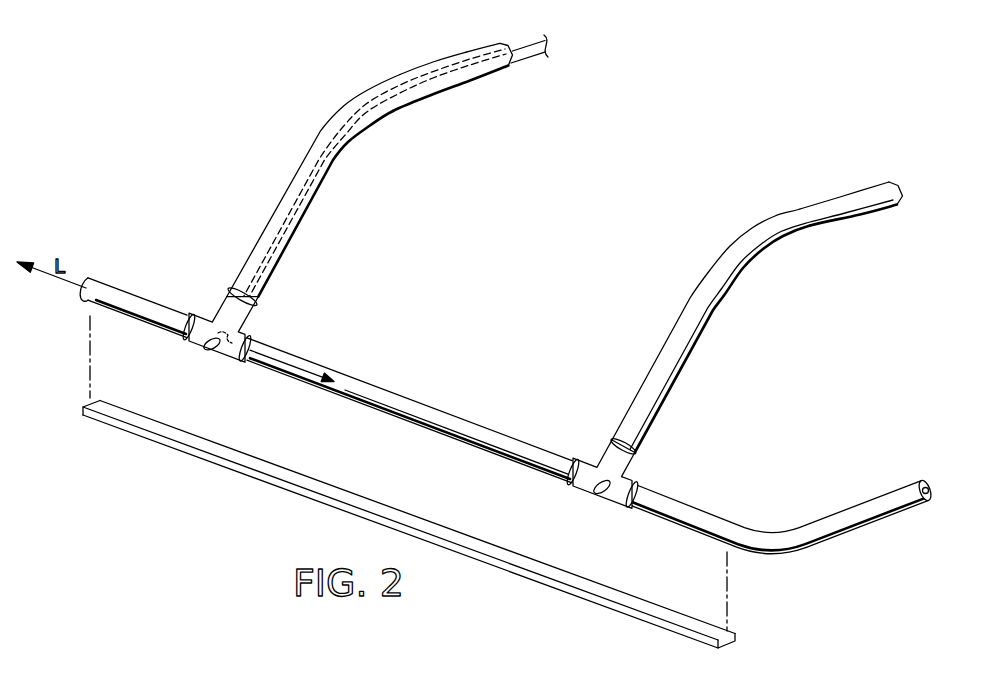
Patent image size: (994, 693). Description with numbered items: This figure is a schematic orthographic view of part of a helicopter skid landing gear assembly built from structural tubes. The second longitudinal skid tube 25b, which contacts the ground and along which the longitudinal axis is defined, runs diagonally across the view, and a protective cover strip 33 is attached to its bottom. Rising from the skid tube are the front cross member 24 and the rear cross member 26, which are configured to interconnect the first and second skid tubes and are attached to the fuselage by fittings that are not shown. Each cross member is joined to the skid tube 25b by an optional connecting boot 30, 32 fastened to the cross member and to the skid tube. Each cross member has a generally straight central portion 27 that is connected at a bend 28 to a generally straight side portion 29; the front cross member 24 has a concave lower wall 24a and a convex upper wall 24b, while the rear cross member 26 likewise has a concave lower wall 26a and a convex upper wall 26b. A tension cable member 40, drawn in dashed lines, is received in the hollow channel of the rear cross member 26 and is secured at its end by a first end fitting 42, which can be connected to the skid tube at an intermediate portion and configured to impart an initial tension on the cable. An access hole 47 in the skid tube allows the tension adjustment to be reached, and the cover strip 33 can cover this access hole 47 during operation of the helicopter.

The front cross member 24 is at (763, 299).
The concave lower wall 24a is at (833, 230).
The convex upper wall 24b is at (827, 202).
The second longitudinal skid tube 25b is at (413, 399).
The rear cross member 26 is at (364, 174).
The concave lower wall 26a is at (447, 88).
The convex upper wall 26b is at (440, 62).
The central portion 27 is at (493, 77).
The bend 28 is at (370, 127).
The side portion 29 is at (300, 230).
The connecting boot 30 is at (617, 455).
The connecting boot 32 is at (220, 331).
The protective cover strip 33 is at (417, 516).
The tension cable member 40 is at (323, 157).
The first end fitting 42 is at (230, 360).
The access hole 47 is at (210, 353).